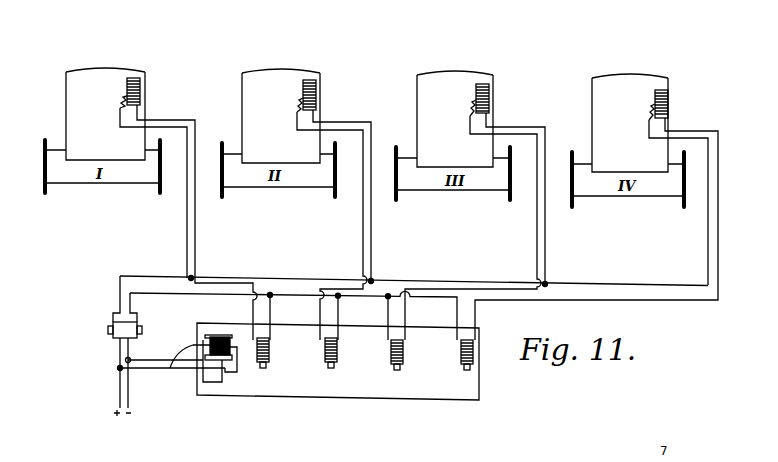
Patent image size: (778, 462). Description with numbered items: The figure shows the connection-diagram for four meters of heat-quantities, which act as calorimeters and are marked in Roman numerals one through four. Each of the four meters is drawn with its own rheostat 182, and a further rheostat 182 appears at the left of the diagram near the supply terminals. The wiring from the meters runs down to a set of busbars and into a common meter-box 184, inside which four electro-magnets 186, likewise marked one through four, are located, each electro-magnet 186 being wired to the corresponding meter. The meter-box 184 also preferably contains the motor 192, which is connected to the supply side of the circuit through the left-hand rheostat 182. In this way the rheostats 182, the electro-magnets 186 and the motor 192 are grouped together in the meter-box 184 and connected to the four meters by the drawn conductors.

The rheostat 182 is at (141, 90).
The meter-box 184 is at (355, 392).
The electro-magnet 186 is at (269, 353).
The motor 192 is at (170, 370).